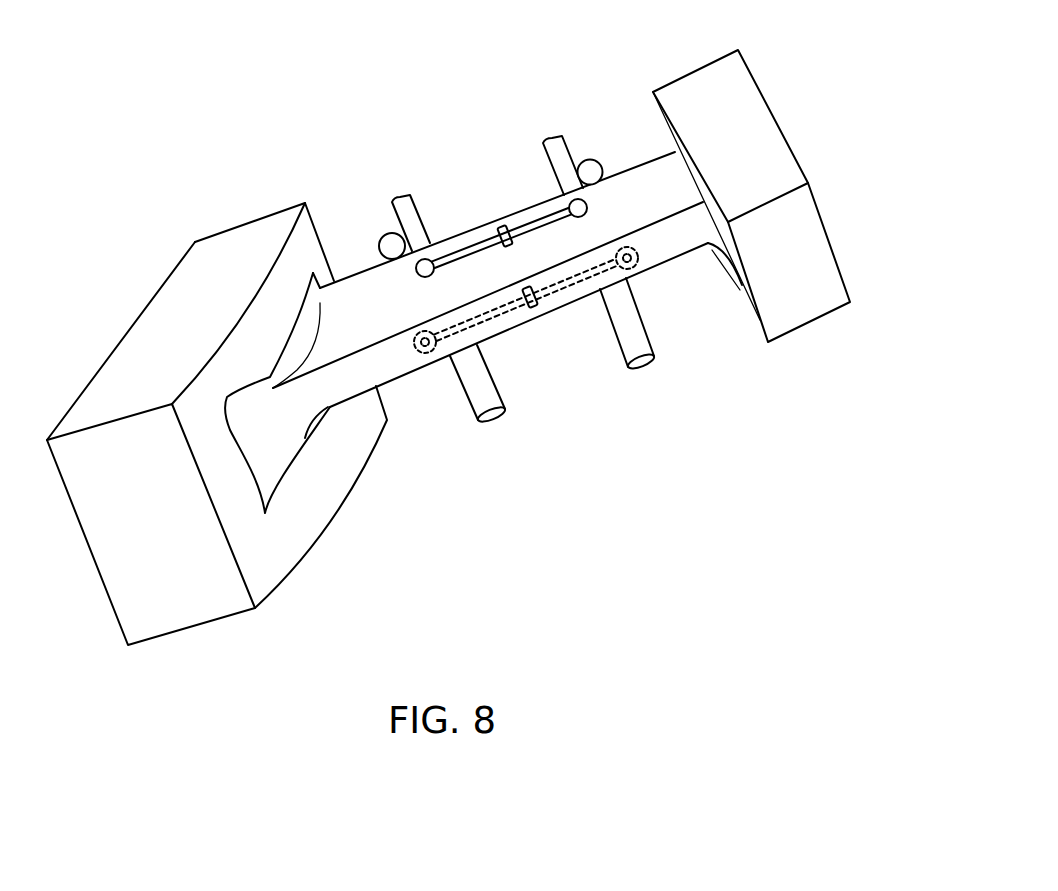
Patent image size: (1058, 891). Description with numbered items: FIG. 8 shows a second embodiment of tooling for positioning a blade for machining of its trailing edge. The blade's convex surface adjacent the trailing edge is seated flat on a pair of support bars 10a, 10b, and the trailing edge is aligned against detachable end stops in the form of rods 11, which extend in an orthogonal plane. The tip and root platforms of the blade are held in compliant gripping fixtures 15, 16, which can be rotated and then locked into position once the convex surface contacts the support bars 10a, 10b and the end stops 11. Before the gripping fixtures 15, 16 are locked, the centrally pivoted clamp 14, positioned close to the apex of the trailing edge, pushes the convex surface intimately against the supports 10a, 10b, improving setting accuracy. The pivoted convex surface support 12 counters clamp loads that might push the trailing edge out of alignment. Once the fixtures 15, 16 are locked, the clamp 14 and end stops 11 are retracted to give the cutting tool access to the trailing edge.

The support bar 10a is at (490, 418).
The support bar 10b is at (643, 362).
The detachable end stop rod 11 is at (383, 237).
The pivoted convex surface support 12 is at (500, 316).
The pivoted clamp 14 is at (533, 223).
The compliant gripping fixture 15 is at (263, 216).
The compliant gripping fixture 16 is at (702, 68).